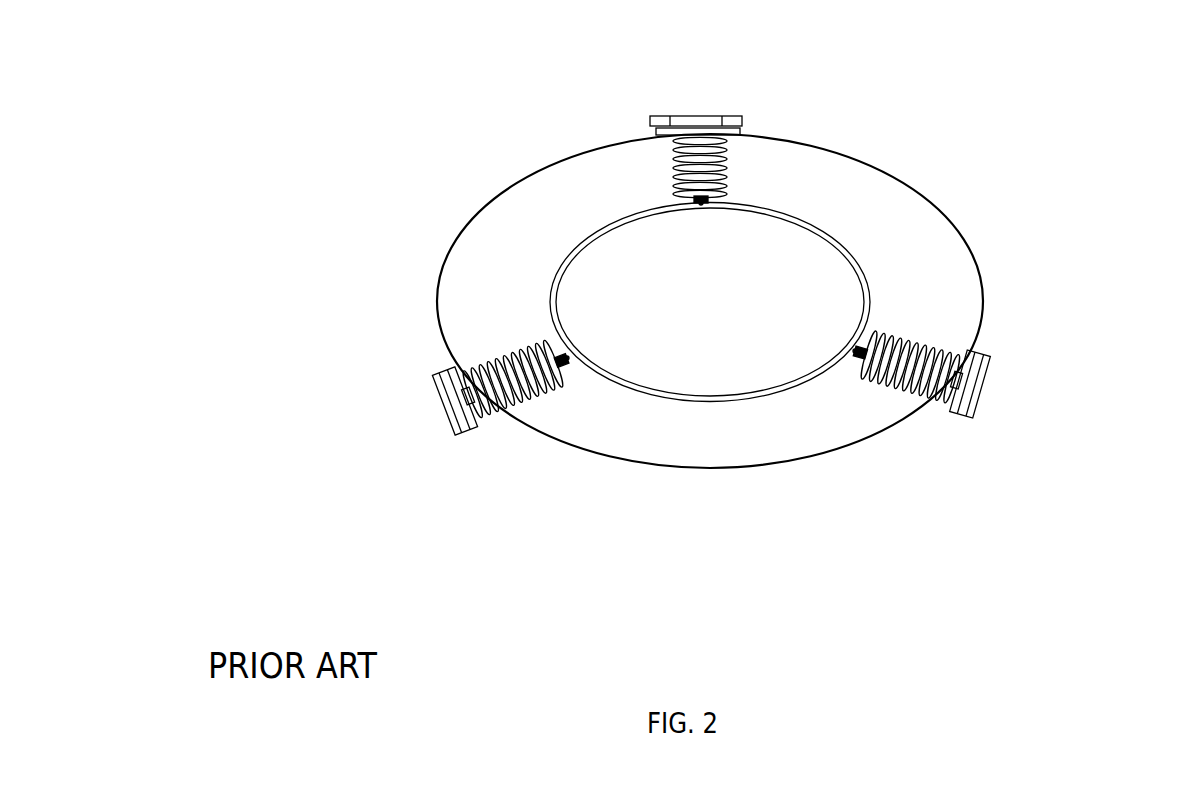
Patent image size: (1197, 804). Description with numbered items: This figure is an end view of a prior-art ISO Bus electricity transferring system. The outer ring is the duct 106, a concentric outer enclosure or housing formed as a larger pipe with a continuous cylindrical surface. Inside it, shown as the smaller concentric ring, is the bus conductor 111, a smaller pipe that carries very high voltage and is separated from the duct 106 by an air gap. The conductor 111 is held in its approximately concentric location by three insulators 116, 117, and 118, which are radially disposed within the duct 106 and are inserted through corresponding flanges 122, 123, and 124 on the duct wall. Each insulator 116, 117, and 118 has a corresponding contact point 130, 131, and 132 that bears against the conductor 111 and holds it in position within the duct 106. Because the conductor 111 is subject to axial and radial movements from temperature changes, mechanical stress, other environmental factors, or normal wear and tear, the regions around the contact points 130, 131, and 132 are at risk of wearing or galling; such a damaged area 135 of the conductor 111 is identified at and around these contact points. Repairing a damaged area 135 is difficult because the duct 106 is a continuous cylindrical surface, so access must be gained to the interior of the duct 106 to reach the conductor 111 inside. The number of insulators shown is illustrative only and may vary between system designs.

The duct 106 is at (953, 223).
The bus conductor 111 is at (797, 220).
The insulator 116 is at (735, 122).
The insulator 117 is at (452, 404).
The insulator 118 is at (975, 402).
The flange 122 is at (658, 134).
The flange 123 is at (445, 372).
The flange 124 is at (985, 358).
The contact point 130 is at (690, 203).
The contact point 131 is at (573, 365).
The contact point 132 is at (866, 362).
The damaged area 135 is at (730, 207).